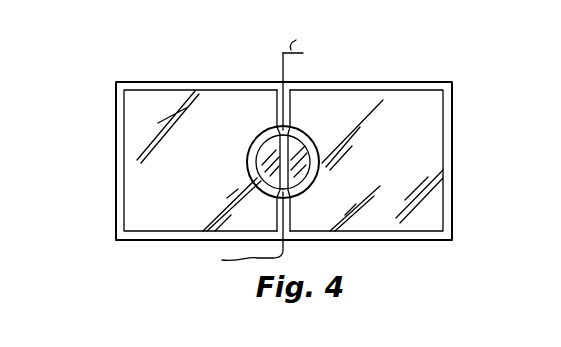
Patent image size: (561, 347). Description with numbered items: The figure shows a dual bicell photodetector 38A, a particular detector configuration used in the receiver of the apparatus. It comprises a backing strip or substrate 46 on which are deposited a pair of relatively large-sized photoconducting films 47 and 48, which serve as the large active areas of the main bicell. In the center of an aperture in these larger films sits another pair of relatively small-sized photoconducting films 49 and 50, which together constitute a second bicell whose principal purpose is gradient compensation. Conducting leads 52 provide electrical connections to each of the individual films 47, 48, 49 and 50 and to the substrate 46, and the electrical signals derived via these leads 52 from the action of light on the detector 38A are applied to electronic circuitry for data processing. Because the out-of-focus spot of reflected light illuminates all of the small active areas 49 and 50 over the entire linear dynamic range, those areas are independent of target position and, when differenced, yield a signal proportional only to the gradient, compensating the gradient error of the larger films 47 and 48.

The dual bicell photodetector 38A is at (92, 64).
The backing strip or substrate 46 is at (453, 140).
The relatively large-sized photoconducting film 47 is at (172, 93).
The relatively large-sized photoconducting film 48 is at (405, 100).
The relatively small-sized photoconducting film 49 is at (309, 130).
The relatively small-sized photoconducting film 50 is at (257, 130).
The conducting leads 52 is at (302, 92).